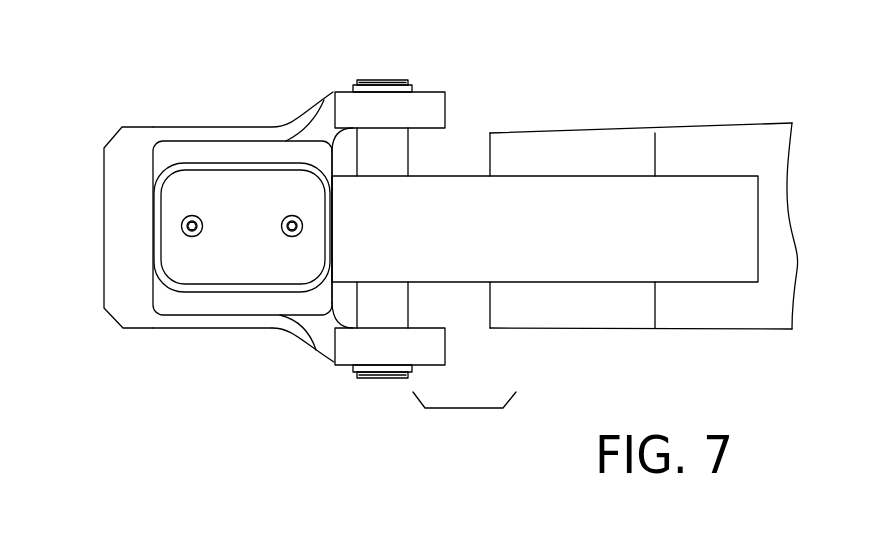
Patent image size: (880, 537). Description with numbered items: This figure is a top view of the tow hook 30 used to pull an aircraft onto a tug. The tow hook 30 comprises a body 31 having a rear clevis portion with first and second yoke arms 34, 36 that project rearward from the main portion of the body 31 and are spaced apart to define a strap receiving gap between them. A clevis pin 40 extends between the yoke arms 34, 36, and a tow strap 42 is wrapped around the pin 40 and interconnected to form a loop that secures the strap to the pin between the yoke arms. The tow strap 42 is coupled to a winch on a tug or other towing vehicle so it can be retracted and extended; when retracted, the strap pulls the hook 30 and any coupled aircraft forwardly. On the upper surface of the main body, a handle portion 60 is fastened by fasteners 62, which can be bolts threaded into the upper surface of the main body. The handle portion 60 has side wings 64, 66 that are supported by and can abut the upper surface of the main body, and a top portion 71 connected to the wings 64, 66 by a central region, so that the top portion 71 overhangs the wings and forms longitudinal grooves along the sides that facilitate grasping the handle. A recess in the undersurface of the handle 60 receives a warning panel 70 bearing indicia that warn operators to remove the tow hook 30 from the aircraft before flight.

The tow hook 30 is at (305, 84).
The body 31 is at (250, 331).
The first yoke arm 34 is at (413, 103).
The second yoke arm 36 is at (351, 354).
The clevis pin 40 is at (400, 301).
The tow strap 42 is at (623, 315).
The handle portion 60 is at (141, 193).
The fasteners 62 is at (288, 238).
The side wing 64 is at (180, 152).
The side wing 66 is at (192, 305).
The warning panel 70 is at (577, 177).
The top portion 71 is at (231, 203).